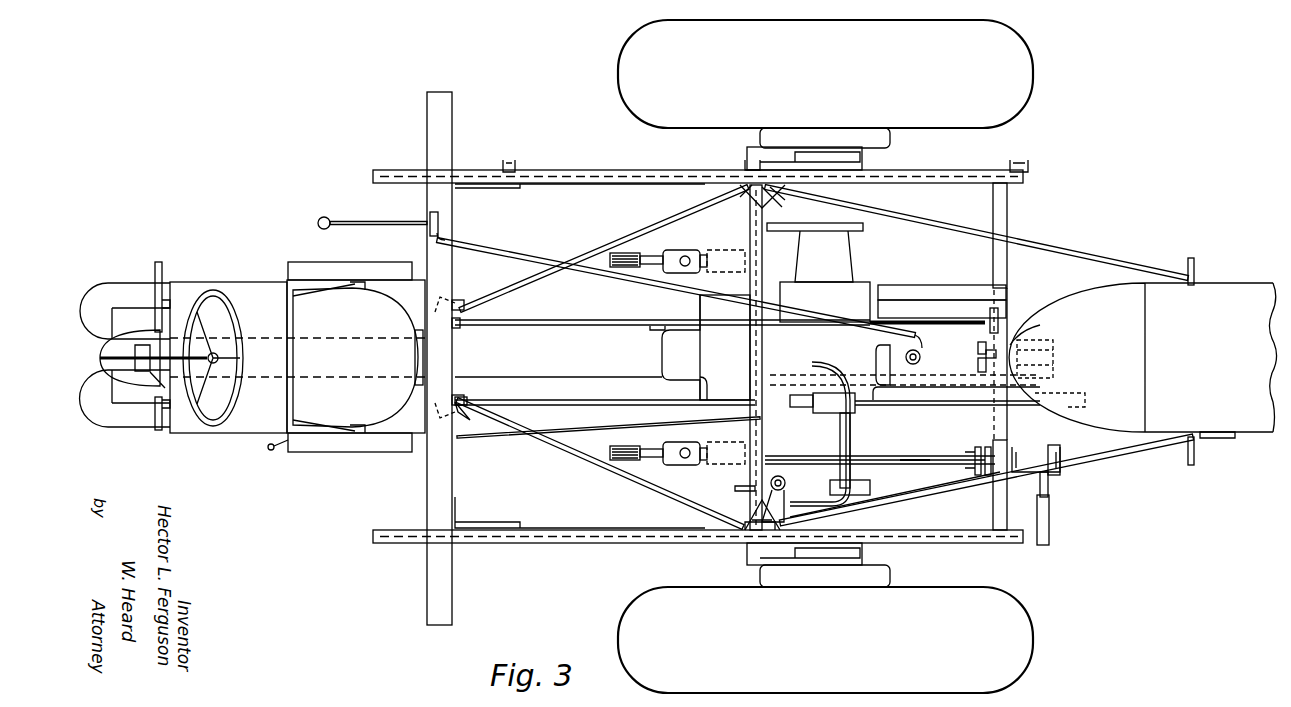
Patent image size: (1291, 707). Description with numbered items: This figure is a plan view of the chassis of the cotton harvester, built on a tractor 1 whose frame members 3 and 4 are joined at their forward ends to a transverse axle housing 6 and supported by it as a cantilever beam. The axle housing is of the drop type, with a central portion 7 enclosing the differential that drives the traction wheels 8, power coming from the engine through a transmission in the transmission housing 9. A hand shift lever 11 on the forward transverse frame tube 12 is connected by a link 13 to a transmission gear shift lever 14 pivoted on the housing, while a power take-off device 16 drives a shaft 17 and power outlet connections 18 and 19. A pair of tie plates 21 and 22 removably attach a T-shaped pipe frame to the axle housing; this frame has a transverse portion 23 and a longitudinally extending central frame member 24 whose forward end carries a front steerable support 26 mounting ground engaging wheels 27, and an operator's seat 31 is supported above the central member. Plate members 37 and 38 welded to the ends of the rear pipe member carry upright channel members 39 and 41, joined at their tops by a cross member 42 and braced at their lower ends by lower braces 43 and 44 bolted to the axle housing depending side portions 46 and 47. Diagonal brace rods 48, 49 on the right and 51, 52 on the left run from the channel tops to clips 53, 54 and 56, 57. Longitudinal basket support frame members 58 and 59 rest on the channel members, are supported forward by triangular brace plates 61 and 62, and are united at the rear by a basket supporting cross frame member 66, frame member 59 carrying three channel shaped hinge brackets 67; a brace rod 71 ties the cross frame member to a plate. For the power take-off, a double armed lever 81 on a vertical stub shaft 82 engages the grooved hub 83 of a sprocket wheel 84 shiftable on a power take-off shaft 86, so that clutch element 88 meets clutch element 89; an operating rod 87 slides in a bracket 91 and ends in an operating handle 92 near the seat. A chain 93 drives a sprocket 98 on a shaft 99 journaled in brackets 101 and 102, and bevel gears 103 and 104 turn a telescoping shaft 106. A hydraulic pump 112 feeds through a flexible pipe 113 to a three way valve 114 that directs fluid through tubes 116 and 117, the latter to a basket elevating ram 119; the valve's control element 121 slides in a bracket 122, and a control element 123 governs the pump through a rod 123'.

The tractor 1 is at (1236, 360).
The frame member 3 is at (918, 275).
The frame member 4 is at (905, 446).
The transverse axle housing 6 is at (800, 265).
The central or intermediate portion 7 is at (865, 292).
The traction wheels 8 is at (1012, 42).
The transmission housing 9 is at (925, 320).
The hand shift lever 11 is at (340, 223).
The forward transverse frame tube 12 is at (427, 485).
The link 13 is at (512, 258).
The transmission gear shift lever 14 is at (906, 357).
The power take-off device 16 is at (1060, 352).
The shaft 17 is at (870, 358).
The power outlet connection 18 is at (665, 462).
The power outlet connection 19 is at (622, 267).
The tie plate 21 is at (865, 487).
The tie plate 22 is at (863, 228).
The transverse portion 23 is at (708, 250).
The longitudinally extending central frame member 24 is at (545, 330).
The front steerable support 26 is at (100, 355).
The ground engaging wheels 27 is at (112, 285).
The operator's seat 31 is at (305, 312).
The plate member 37 is at (715, 186).
The plate member 38 is at (700, 527).
The upright channel member 39 is at (782, 200).
The upright channel member 41 is at (745, 540).
The cross member 42 is at (740, 326).
The lower brace 43 is at (745, 150).
The lower brace 44 is at (747, 556).
The axle housing depending side portion 46 is at (888, 140).
The axle housing depending side portion 47 is at (890, 577).
The diagonal brace rod 48 is at (1070, 256).
The diagonal brace rod 49 is at (600, 258).
The diagonal brace rod 51 is at (905, 505).
The diagonal brace rod 52 is at (575, 458).
The clip 53 is at (1185, 457).
The clip 54 is at (448, 420).
The clip 56 is at (1190, 258).
The clip 57 is at (462, 297).
The basket support frame member 58 is at (545, 545).
The basket support frame member 59 is at (585, 170).
The triangular brace plate 61 is at (493, 186).
The triangular brace plate 62 is at (500, 528).
The basket supporting cross frame member 66 is at (1008, 212).
The channel shaped hinge bracket 67 is at (508, 160).
The brace rod 71 is at (950, 543).
The double armed lever 81 is at (985, 325).
The vertical stub shaft 82 is at (978, 347).
The hub 83 is at (978, 366).
The sprocket wheel 84 is at (1032, 343).
The power take-off shaft 86 is at (986, 356).
The operating rod 87 is at (660, 320).
The clutch element 88 is at (1035, 366).
The clutch element 89 is at (1035, 352).
The bracket 91 is at (460, 335).
The operating handle 92 is at (428, 338).
The chain 93 is at (975, 452).
The sprocket 98 is at (992, 480).
The shaft 99 is at (910, 464).
The bracket 101 is at (1015, 452).
The bracket 102 is at (778, 476).
The bevel gear 103 is at (1058, 452).
The bevel gear 104 is at (1048, 480).
The telescoping shaft 106 is at (1049, 520).
The hydraulic pump 112 is at (1090, 400).
The flexible pipe 113 is at (935, 410).
The three way valve 114 is at (800, 395).
The tube 116 is at (812, 360).
The tube 117 is at (835, 413).
The basket elevating ram 119 is at (745, 486).
The control element 121 is at (600, 400).
The bracket 122 is at (470, 400).
The control element 123 is at (258, 458).
The rod 123' is at (608, 443).